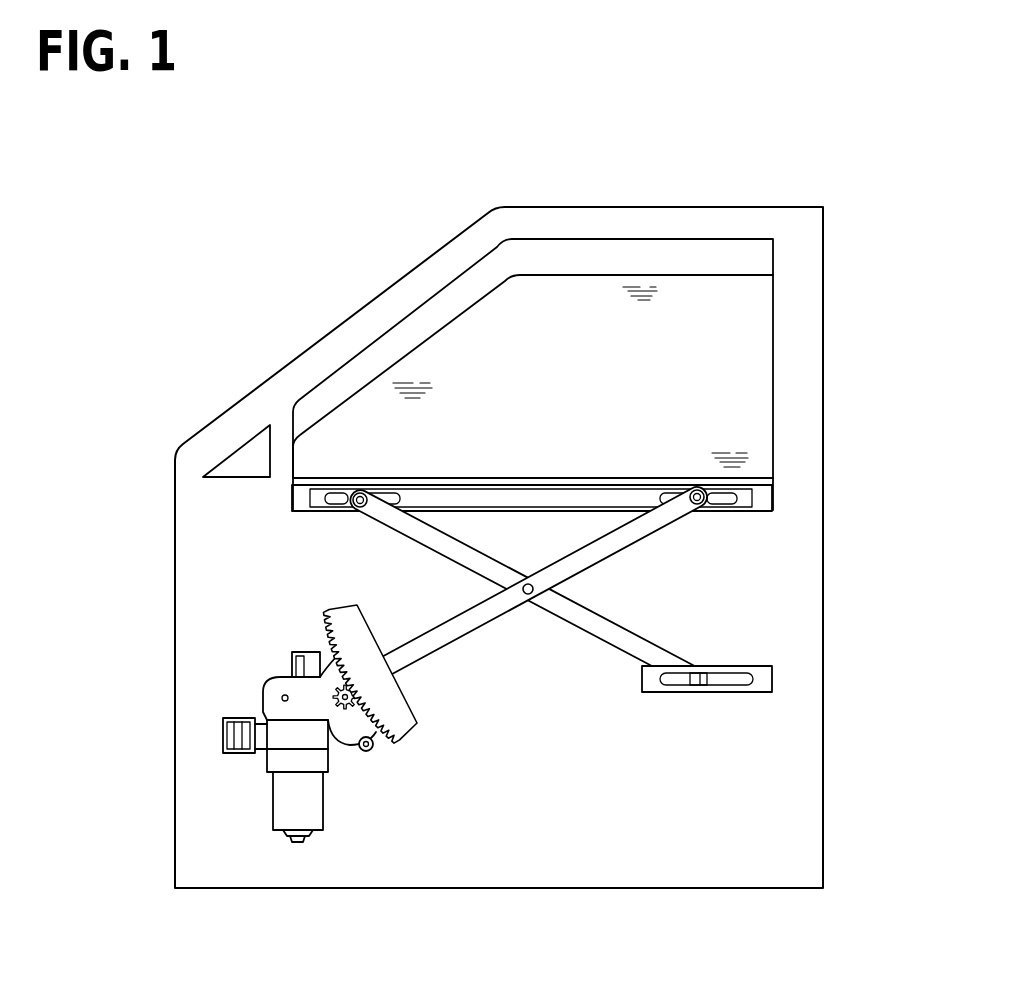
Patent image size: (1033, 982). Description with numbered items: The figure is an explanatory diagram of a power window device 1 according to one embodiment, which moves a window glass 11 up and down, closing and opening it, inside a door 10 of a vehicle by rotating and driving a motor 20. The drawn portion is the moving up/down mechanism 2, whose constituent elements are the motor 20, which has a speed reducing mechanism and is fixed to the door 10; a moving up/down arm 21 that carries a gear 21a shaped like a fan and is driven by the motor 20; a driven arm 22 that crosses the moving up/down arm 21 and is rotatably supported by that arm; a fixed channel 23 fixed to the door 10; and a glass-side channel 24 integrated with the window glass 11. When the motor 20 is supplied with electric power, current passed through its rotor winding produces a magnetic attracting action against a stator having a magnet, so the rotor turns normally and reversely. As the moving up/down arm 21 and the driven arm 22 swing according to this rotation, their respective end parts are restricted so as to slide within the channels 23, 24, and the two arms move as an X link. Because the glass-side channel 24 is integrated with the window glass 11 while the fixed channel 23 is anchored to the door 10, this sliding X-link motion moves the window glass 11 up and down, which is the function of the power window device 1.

The power window device 1 is at (252, 322).
The moving up/down mechanism 2 is at (232, 632).
The door 10 is at (793, 583).
The window glass 11 is at (560, 293).
The motor 20 is at (282, 810).
The moving up/down arm 21 is at (633, 538).
The gear 21a is at (418, 728).
The driven arm 22 is at (583, 619).
The fixed channel 23 is at (728, 689).
The glass-side channel 24 is at (745, 492).